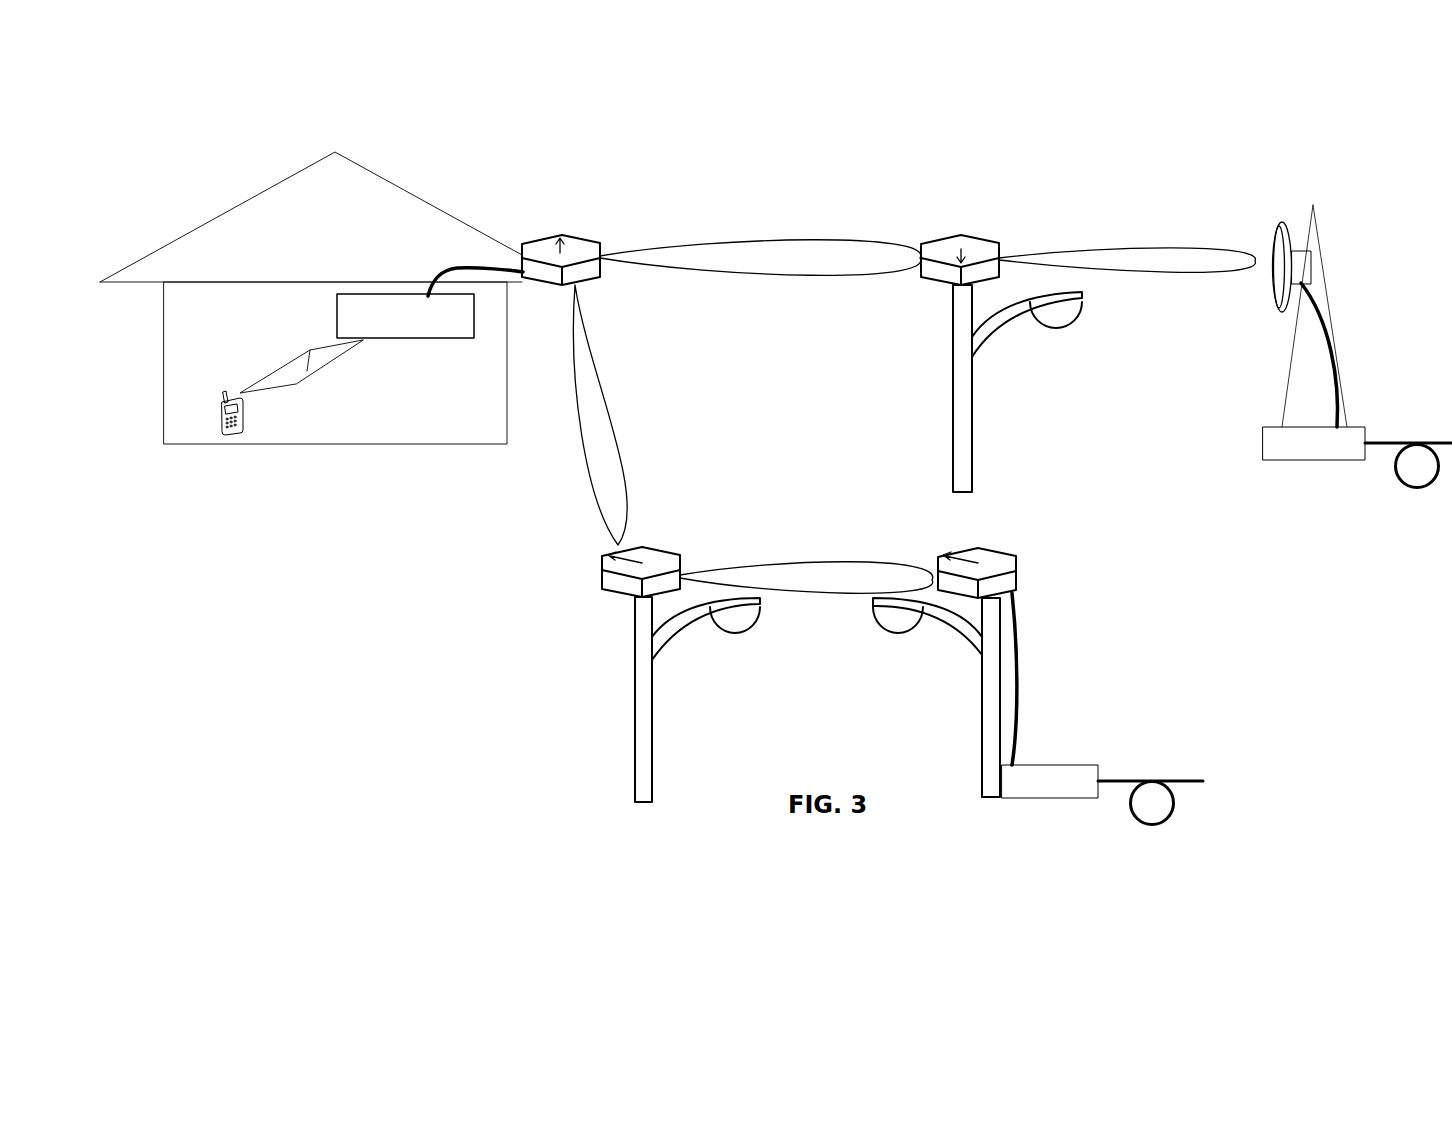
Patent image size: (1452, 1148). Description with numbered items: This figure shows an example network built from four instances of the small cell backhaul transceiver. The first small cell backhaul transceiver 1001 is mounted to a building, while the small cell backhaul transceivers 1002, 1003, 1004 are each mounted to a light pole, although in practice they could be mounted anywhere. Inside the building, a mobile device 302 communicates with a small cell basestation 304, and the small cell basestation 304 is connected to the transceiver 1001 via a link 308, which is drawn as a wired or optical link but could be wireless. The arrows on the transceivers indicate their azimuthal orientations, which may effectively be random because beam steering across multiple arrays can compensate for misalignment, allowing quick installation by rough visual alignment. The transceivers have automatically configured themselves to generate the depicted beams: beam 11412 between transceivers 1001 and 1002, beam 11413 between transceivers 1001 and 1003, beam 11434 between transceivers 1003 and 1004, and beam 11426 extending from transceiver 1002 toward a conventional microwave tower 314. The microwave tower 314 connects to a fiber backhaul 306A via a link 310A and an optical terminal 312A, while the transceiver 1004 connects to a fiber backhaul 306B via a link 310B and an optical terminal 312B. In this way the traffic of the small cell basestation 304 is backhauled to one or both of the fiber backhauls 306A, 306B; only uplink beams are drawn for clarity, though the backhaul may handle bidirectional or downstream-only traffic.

The small cell backhaul transceiver 1001 is at (540, 237).
The small cell backhaul transceiver 1002 is at (942, 238).
The small cell backhaul transceiver 1003 is at (605, 580).
The small cell backhaul transceiver 1004 is at (1008, 543).
The beam 11412 is at (767, 243).
The beam 11426 is at (1135, 249).
The beam 11413 is at (587, 438).
The beam 11434 is at (828, 565).
The mobile device 302 is at (243, 425).
The small cell basestation 304 is at (337, 303).
The link 308 is at (455, 268).
The conventional microwave tower 314 is at (1282, 224).
The link 310A is at (1327, 330).
The link 310B is at (1012, 665).
The optical terminal 312A is at (1280, 462).
The optical terminal 312B is at (1033, 800).
The fiber backhaul 306A is at (1402, 484).
The fiber backhaul 306B is at (1143, 824).